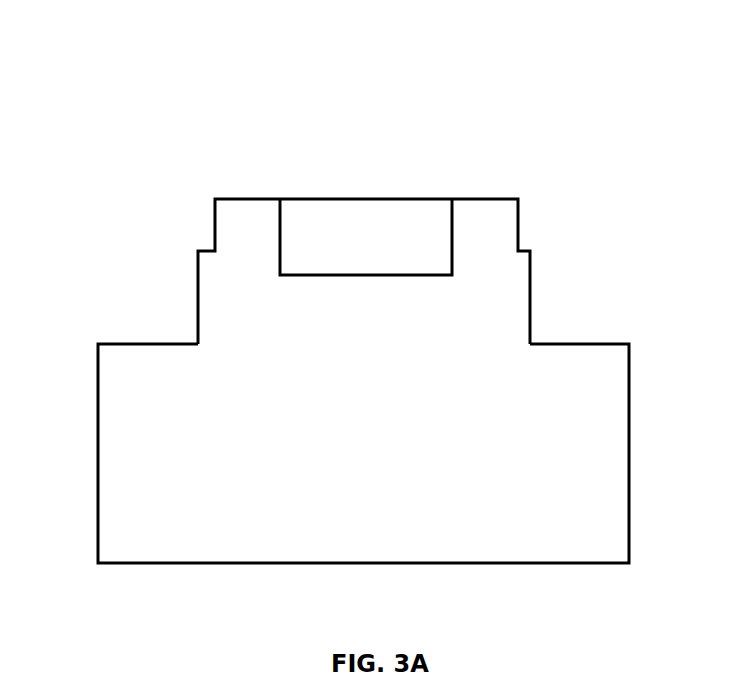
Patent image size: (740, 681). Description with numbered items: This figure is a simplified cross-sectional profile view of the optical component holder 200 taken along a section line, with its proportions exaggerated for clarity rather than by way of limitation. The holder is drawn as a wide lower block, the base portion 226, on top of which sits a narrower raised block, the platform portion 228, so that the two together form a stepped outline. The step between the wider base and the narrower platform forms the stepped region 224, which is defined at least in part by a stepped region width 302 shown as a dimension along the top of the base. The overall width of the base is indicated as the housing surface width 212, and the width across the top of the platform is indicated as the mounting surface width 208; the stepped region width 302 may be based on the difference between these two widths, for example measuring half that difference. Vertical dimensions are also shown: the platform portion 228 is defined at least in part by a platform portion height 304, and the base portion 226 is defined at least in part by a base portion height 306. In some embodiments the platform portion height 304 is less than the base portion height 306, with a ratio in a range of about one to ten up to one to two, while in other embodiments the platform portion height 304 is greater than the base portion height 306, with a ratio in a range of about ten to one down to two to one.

The optical component holder 200 is at (401, 380).
The stepped region 224 is at (603, 258).
The base portion 226 is at (456, 521).
The platform portion 228 is at (455, 308).
The mounting surface width 208 is at (518, 324).
The housing surface width 212 is at (618, 451).
The stepped region width 302 is at (542, 324).
The platform portion height 304 is at (180, 333).
The base portion height 306 is at (94, 563).